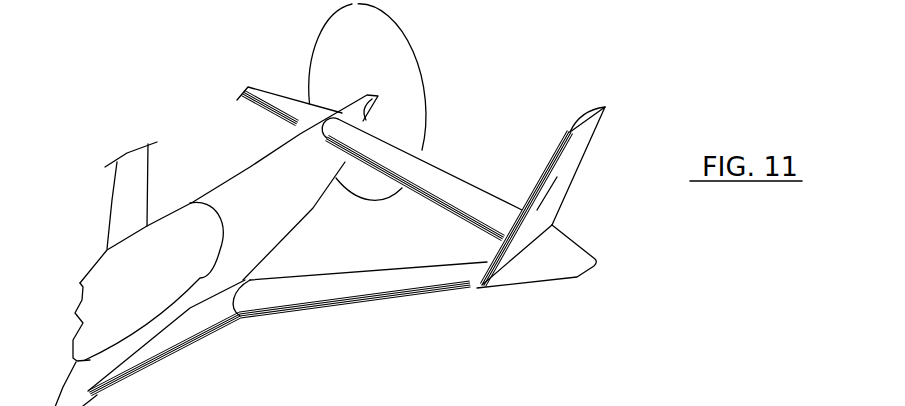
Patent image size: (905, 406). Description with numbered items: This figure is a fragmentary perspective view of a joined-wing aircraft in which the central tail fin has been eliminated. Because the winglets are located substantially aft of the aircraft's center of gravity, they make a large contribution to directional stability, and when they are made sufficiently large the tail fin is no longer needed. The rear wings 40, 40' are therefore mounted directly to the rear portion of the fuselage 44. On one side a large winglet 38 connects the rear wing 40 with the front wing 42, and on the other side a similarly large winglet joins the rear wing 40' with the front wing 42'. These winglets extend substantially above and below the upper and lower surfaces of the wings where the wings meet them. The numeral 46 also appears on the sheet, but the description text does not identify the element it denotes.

The winglet 38 is at (572, 213).
The rear wing 40 is at (422, 178).
The rear wing 40' is at (289, 73).
The front wing 42 is at (276, 343).
The front wing 42' is at (103, 195).
The fuselage 44 is at (290, 203).
The lower fuselage 46 is at (411, 401).